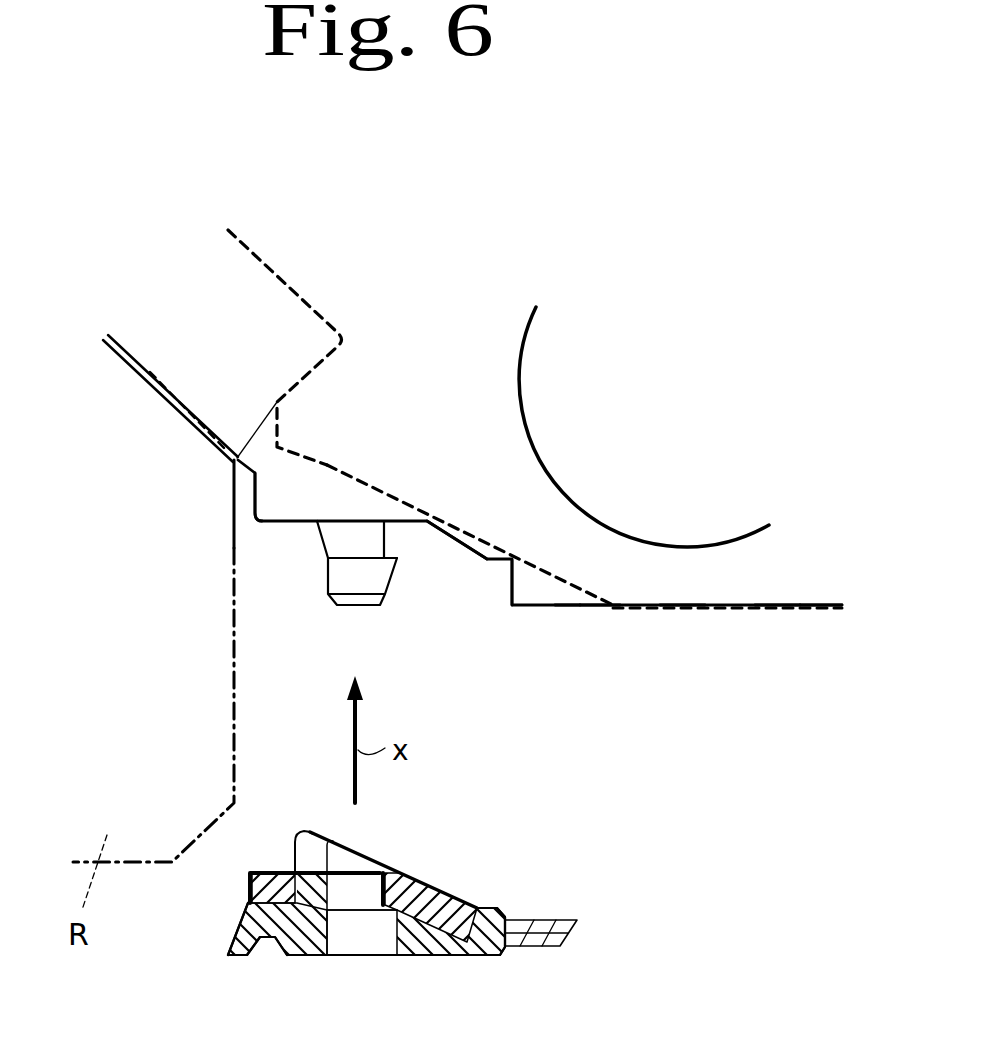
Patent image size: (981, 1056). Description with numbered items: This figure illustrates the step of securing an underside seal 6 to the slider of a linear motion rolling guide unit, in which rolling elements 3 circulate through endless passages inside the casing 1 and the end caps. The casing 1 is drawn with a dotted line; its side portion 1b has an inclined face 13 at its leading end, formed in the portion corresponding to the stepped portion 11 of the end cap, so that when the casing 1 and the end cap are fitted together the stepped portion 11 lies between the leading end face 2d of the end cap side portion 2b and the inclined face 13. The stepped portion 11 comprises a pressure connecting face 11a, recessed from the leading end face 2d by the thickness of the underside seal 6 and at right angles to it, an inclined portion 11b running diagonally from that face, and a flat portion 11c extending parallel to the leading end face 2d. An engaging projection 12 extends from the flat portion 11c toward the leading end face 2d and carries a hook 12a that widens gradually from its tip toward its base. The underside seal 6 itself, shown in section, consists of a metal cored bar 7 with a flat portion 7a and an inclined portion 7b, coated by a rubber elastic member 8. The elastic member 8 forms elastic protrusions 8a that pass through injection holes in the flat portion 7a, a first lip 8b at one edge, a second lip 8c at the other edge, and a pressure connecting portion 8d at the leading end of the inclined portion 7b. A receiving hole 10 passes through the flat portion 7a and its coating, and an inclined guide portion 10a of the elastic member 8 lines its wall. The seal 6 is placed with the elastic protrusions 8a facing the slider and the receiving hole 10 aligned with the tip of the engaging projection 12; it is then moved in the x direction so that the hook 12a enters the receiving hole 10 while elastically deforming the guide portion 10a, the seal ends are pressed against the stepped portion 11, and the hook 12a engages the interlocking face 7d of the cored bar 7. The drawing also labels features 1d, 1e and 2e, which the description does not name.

The casing 1 is at (152, 372).
The side portion of the casing 1b is at (782, 575).
The body panel portion 1d is at (809, 607).
The body panel portion 1e is at (680, 590).
The side portion of the end cap 2b is at (309, 485).
The leading end face of the side portion 2d is at (594, 598).
The bumper portion 2e is at (565, 592).
The rolling element 3 is at (146, 330).
The underside seal 6 is at (374, 908).
The cored bar 7 is at (324, 864).
The flat portion 7a is at (265, 878).
The inclined portion 7b is at (445, 890).
The interlocking face 7d is at (385, 915).
The elastic member 8 is at (438, 945).
The elastic protrusion 8a is at (298, 832).
The first lip 8b is at (233, 956).
The second lip 8c is at (542, 936).
The pressure connecting portion 8d is at (487, 946).
The receiving hole 10 is at (350, 942).
The guide portion 10a is at (327, 845).
The stepped portion 11 is at (438, 604).
The pressure connecting face 11a is at (512, 590).
The inclined portion 11b is at (457, 545).
The flat portion 11c is at (280, 533).
The engaging projection 12 is at (314, 588).
The hook 12a is at (390, 561).
The inclined face 13 is at (326, 466).